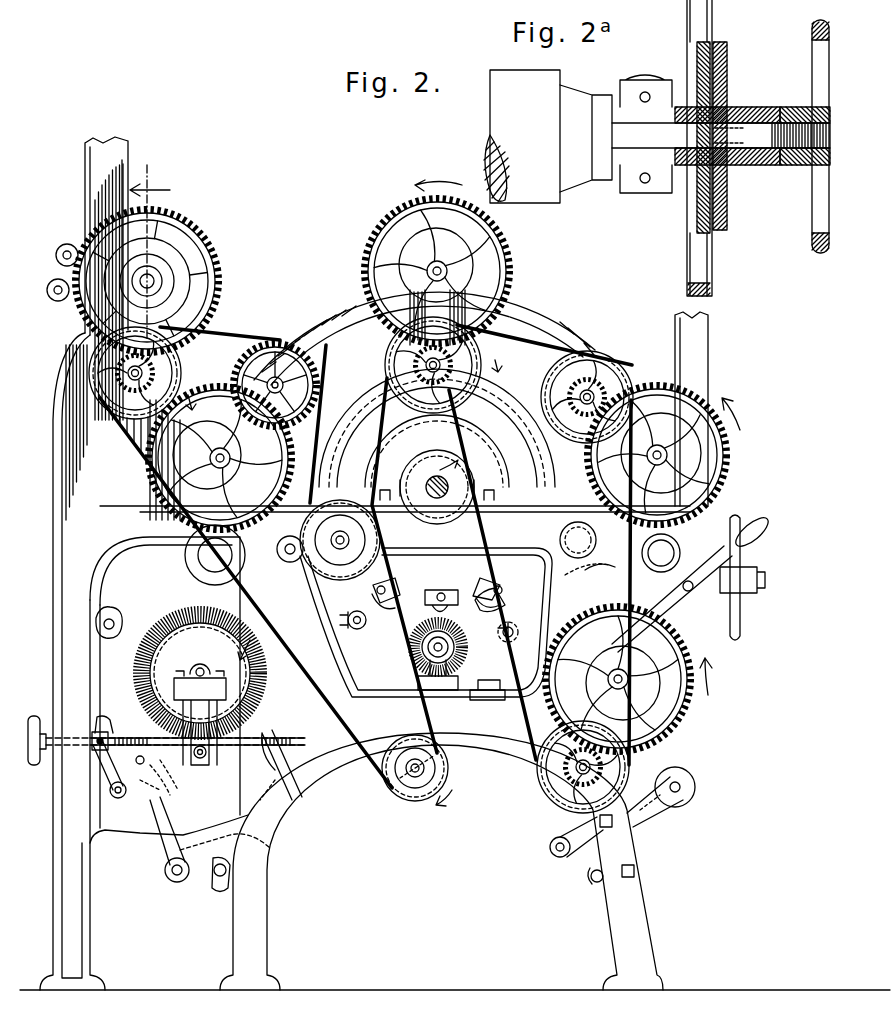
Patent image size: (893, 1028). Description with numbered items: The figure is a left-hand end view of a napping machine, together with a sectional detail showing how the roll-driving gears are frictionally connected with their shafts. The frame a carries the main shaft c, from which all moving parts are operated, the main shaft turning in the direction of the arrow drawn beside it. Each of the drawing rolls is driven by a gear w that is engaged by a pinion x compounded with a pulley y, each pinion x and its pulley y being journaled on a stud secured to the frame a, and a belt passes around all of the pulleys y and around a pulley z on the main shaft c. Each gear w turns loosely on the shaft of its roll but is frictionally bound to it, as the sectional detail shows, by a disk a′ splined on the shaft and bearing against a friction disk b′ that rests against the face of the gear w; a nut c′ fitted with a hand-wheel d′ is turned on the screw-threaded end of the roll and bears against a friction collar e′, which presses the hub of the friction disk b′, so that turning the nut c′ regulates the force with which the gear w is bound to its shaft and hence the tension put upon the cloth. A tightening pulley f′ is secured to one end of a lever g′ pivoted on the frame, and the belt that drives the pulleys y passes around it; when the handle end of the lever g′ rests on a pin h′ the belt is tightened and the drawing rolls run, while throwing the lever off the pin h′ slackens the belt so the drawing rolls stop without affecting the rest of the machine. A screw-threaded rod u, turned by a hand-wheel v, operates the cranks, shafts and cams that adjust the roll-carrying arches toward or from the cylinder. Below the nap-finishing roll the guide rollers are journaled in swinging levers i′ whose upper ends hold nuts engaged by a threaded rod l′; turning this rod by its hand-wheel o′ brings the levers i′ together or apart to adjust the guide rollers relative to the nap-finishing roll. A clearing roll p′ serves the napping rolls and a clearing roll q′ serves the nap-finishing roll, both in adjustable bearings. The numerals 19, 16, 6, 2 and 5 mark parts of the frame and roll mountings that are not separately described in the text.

In FIG. 2, the frame a is at (374, 563).
In FIG. 2, the main shaft c is at (437, 494).
In FIG. 2, the pulley z is at (435, 476).
In FIG. 2, the gear w is at (222, 282).
In FIG. 2a, the gear w is at (692, 241).
In FIG. 2, the pinion x is at (107, 367).
In FIG. 2, the pulley y is at (93, 383).
In FIG. 2, the rod u is at (260, 385).
In FIG. 2, the hand-wheel d′ is at (244, 562).
In FIG. 2a, the hand-wheel d′ is at (812, 213).
In FIG. 2, the tightening pulley f′ is at (395, 774).
In FIG. 2, the pivot lug 19 is at (112, 618).
In FIG. 2, the rod l′ is at (112, 735).
In FIG. 2, the hand-wheel o′ is at (32, 716).
In FIG. 2, the swinging arms or levers i′ is at (108, 770).
In FIG. 2, the lever g′ is at (507, 661).
In FIG. 2, the clearing roll p′ is at (419, 648).
In FIG. 2, the pivot stud 16 is at (366, 620).
In FIG. 2, the stud 6 is at (498, 631).
In FIG. 2, the hand-wheel v is at (692, 582).
In FIG. 2, the pin h′ is at (678, 597).
In FIG. 2, the clearing roll q′ is at (623, 577).
In FIG. 2, the roller arm 2 is at (677, 777).
In FIG. 2, the swing arm 5 is at (552, 848).
In FIG. 2a, the disk a′ is at (728, 89).
In FIG. 2a, the friction disk b′ is at (717, 43).
In FIG. 2a, the friction collar e′ is at (767, 160).
In FIG. 2a, the nut c′ is at (795, 158).